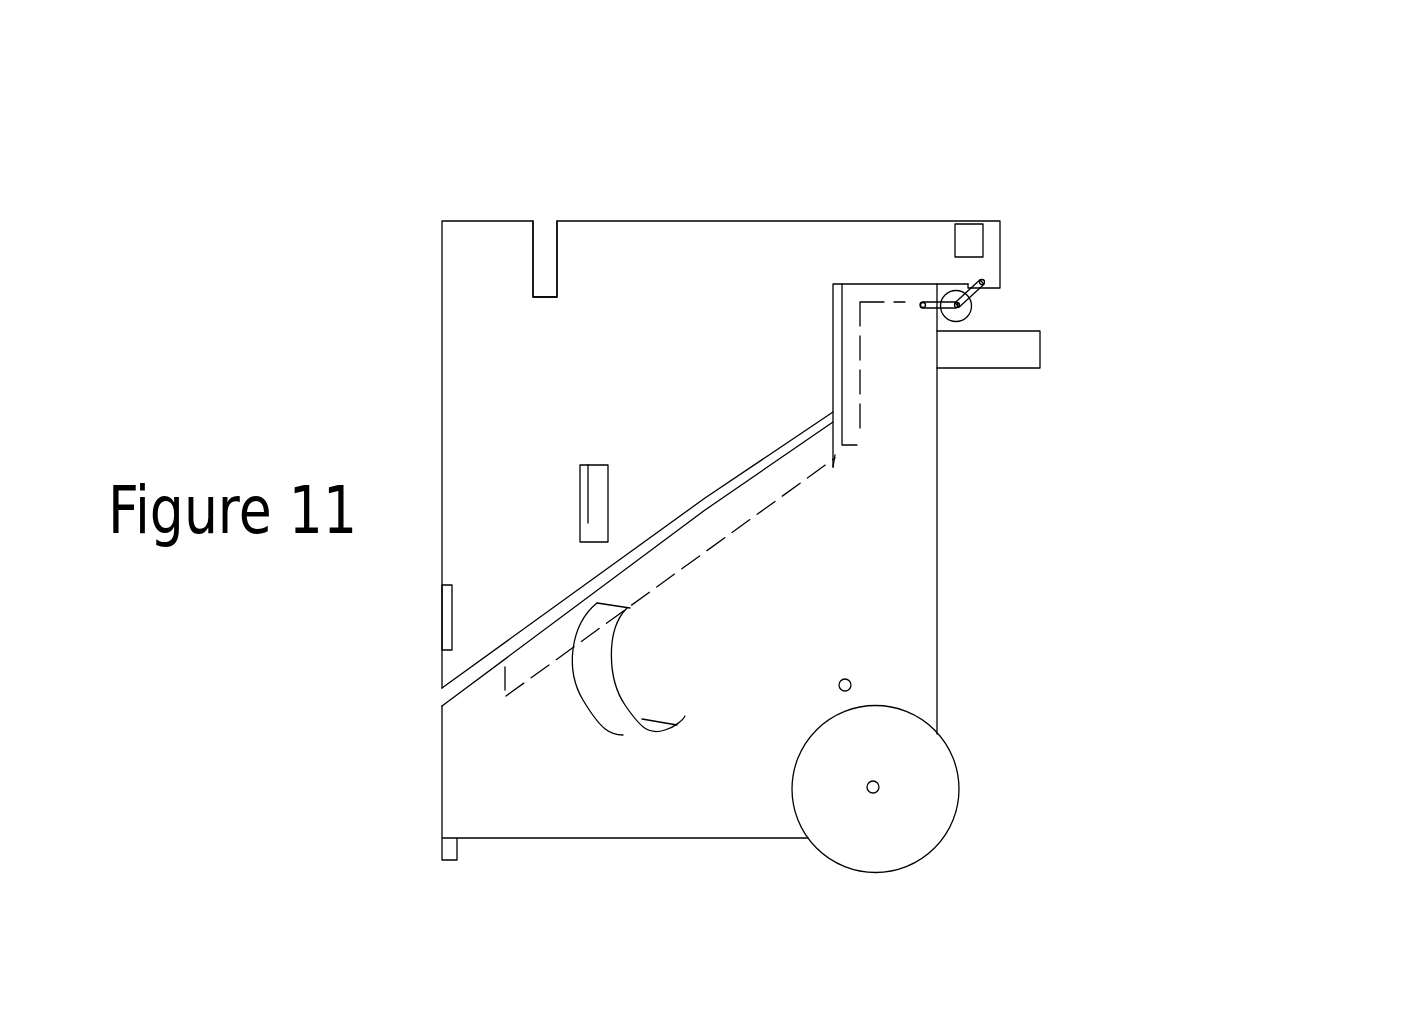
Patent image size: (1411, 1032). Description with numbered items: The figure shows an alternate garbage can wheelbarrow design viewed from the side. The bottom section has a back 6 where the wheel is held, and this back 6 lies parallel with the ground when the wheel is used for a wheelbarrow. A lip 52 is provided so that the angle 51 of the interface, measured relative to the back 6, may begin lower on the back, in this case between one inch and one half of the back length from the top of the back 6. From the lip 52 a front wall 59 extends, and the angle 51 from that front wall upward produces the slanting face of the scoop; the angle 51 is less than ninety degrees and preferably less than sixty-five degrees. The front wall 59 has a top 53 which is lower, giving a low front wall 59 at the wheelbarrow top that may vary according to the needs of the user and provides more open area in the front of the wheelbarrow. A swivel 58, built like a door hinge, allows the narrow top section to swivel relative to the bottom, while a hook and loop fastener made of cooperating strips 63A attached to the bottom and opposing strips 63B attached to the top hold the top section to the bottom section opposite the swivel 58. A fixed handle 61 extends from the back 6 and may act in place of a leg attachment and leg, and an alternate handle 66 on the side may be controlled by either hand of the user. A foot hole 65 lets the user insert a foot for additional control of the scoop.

The back 6 is at (937, 677).
The angle 51 is at (857, 445).
The lip 52 is at (920, 285).
The front wall top 53 is at (833, 313).
The swivel 58 is at (972, 310).
The front wall 59 is at (902, 372).
The fixed handle 61 is at (1042, 355).
The cooperating strips 63A is at (605, 688).
The opposing strips 63B is at (580, 538).
The foot hole 65 is at (550, 248).
The alternate handle 66 is at (970, 238).